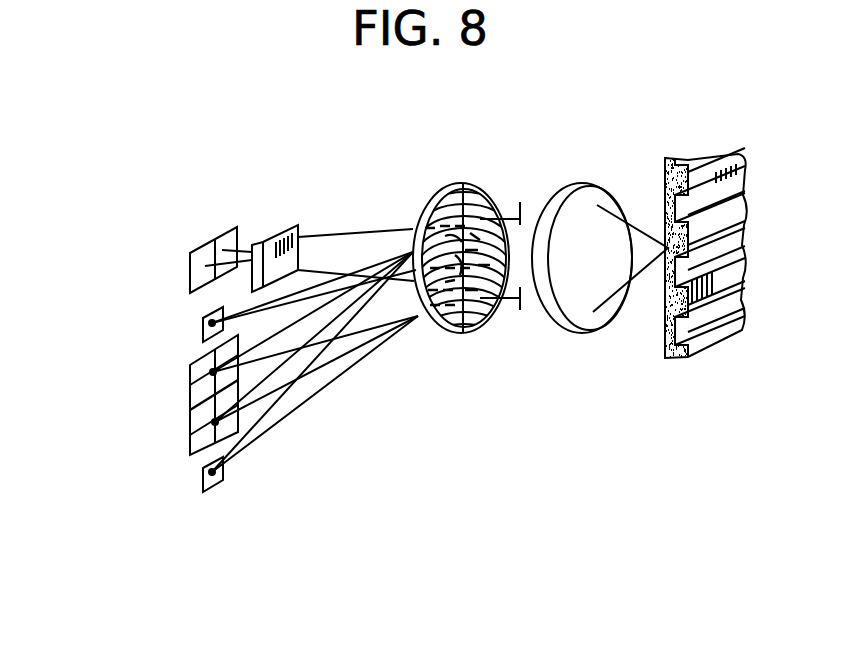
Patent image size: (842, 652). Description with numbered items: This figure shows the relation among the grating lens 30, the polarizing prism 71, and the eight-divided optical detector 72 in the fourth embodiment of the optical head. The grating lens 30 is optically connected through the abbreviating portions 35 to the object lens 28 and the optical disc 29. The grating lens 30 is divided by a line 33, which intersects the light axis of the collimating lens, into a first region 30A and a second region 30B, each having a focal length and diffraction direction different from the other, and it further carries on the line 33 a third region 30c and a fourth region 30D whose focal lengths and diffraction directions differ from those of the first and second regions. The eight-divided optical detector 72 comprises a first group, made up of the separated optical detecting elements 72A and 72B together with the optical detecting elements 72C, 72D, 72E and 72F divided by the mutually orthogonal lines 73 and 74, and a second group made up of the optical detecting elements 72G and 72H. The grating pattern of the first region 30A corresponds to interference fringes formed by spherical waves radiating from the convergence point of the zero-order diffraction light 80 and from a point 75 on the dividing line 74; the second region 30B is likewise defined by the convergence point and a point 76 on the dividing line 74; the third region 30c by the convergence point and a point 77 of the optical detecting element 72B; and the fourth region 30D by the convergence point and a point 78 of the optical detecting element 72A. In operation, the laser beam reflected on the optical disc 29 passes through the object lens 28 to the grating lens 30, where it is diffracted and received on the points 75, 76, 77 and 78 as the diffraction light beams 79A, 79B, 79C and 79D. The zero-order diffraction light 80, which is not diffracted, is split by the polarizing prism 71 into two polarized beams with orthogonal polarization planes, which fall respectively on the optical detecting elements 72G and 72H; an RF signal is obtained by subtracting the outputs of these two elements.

The eight-divided optical detector 72 is at (122, 312).
The optical detecting element 72A is at (215, 490).
The optical detecting element 72B is at (207, 316).
The optical detecting element 72C is at (210, 352).
The optical detecting element 72D is at (237, 437).
The optical detecting element 72E is at (200, 377).
The optical detecting element 72F is at (190, 446).
The optical detecting element 72G is at (198, 258).
The optical detecting element 72H is at (227, 237).
The polarizing prism 71 is at (287, 223).
The dividing line 73 is at (188, 408).
The dividing line 74 is at (197, 453).
The point on dividing line 74 75 is at (192, 381).
The point on dividing line 74 76 is at (190, 428).
The point of optical detecting element 72B 77 is at (207, 327).
The point of optical detecting element 72A 78 is at (210, 458).
The diffraction light beam 79A is at (300, 350).
The diffraction light beam 79B is at (278, 368).
The diffraction light beam 79C is at (280, 398).
The diffraction light beam 79D is at (313, 283).
The zero-order diffraction light 80 is at (390, 235).
The grating lens 30 is at (455, 184).
The first region 30A is at (472, 335).
The second region 30B is at (450, 335).
The third region 30c is at (492, 200).
The fourth region 30D is at (487, 322).
The line 33 is at (474, 185).
The abbreviating portions 35 is at (545, 203).
The object lens 28 is at (590, 335).
The optical disc 29 is at (698, 350).